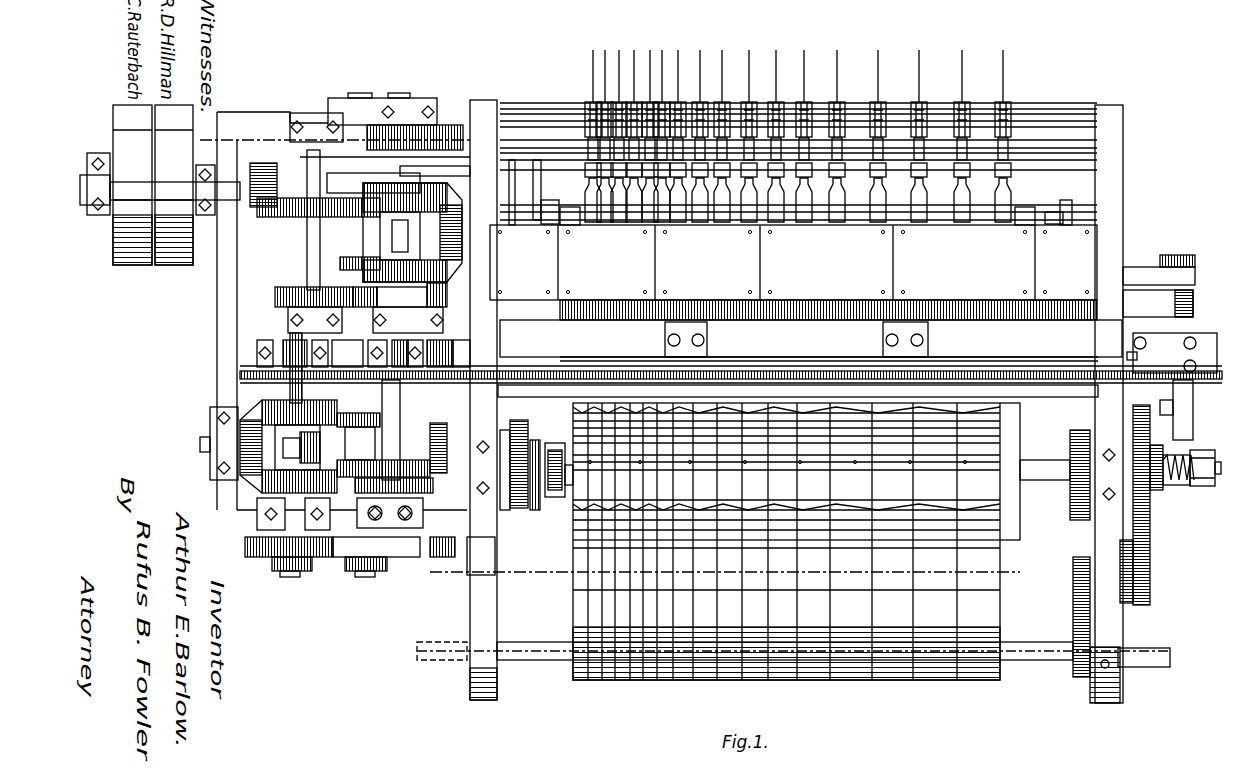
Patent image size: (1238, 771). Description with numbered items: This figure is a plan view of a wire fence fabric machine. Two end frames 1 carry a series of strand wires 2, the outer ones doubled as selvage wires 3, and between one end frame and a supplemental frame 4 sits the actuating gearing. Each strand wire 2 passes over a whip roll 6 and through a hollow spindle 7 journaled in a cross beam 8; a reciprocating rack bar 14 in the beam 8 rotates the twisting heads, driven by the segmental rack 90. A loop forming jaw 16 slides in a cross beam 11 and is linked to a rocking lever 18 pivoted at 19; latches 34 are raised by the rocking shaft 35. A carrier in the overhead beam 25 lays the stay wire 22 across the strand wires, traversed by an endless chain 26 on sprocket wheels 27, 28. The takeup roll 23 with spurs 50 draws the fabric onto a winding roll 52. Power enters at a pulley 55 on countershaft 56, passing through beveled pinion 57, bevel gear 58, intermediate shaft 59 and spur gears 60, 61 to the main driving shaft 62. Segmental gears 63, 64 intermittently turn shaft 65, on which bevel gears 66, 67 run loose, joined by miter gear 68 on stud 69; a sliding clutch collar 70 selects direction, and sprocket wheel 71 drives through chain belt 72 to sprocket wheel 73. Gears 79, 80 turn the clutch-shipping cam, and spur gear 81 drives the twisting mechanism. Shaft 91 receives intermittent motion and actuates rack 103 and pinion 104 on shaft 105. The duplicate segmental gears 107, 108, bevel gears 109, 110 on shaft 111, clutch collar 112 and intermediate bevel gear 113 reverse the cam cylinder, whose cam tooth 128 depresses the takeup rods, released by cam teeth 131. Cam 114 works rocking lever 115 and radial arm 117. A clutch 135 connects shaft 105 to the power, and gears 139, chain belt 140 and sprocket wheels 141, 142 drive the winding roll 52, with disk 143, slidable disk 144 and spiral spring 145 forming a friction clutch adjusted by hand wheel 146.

The end frame 1 is at (483, 100).
The strand wire 2 is at (776, 72).
The selvage wire 3 is at (200, 444).
The supplemental frame 4 is at (595, 178).
The whip roll 6 is at (580, 110).
The hollow spindle 7 is at (580, 292).
The cross beam 8 is at (490, 250).
The cross beam 11 is at (498, 385).
The rack bar 14 is at (1140, 270).
The loop forming jaw 16 is at (1010, 158).
The rocking lever 18 is at (593, 148).
The pivot 19 is at (798, 142).
The stay wire 22 is at (851, 552).
The takeup roll 23 is at (1015, 490).
The overhead beam 25 is at (508, 334).
The endless chain 26 is at (815, 370).
The sprocket wheel 27 is at (440, 370).
The sprocket wheel 28 is at (1193, 400).
The latch 34 is at (580, 210).
The rocking shaft 35 is at (540, 218).
The spur 50 is at (573, 530).
The winding roll 52 is at (527, 642).
The pulley 55 is at (170, 255).
The countershaft 56 is at (207, 210).
The beveled pinion 57 is at (258, 208).
The bevel gear 58 is at (292, 215).
The intermediate shaft 59 is at (307, 252).
The spur gear 60 is at (275, 293).
The spur gear 61 is at (447, 293).
The main driving shaft 62 is at (360, 93).
The segmental gear 63 is at (408, 557).
The segmental gear 64 is at (245, 549).
The shaft 65 is at (298, 578).
The bevel gear 66 is at (268, 490).
The bevel gear 67 is at (262, 402).
The miter gear 68 is at (250, 438).
The stud 69 is at (210, 460).
The sliding clutch collar 70 is at (300, 460).
The sprocket wheel 71 is at (250, 371).
The chain belt 72 is at (292, 362).
The sprocket wheel 73 is at (437, 425).
The gear 79 is at (312, 446).
The gear 80 is at (382, 440).
The spur gear 81 is at (340, 372).
The segmental rack 90 is at (1193, 312).
The shaft 91 is at (400, 412).
The rack 103 is at (510, 450).
The pinion 104 is at (480, 565).
The shaft 105 is at (1035, 460).
The segmental gear 107 is at (345, 110).
The segmental gear 108 is at (445, 125).
The bevel gear 109 is at (445, 170).
The bevel gear 110 is at (455, 278).
The shaft 111 is at (400, 93).
The sliding clutch collar 112 is at (450, 190).
The intermediate bevel gear 113 is at (452, 222).
The cam 114 is at (327, 185).
The rocking lever 115 is at (513, 160).
The radial arm 117 is at (545, 222).
The cam tooth 128 is at (1071, 250).
The cam tooth 131 is at (1080, 510).
The clutch 135 is at (530, 505).
The gear 139 is at (1070, 610).
The chain belt 140 is at (1150, 540).
The sprocket wheel 141 is at (1148, 604).
The sprocket wheel 142 is at (1157, 501).
The disk 143 is at (1150, 460).
The slidable disk 144 is at (1168, 460).
The spiral spring 145 is at (1175, 486).
The hand wheel 146 is at (1200, 488).